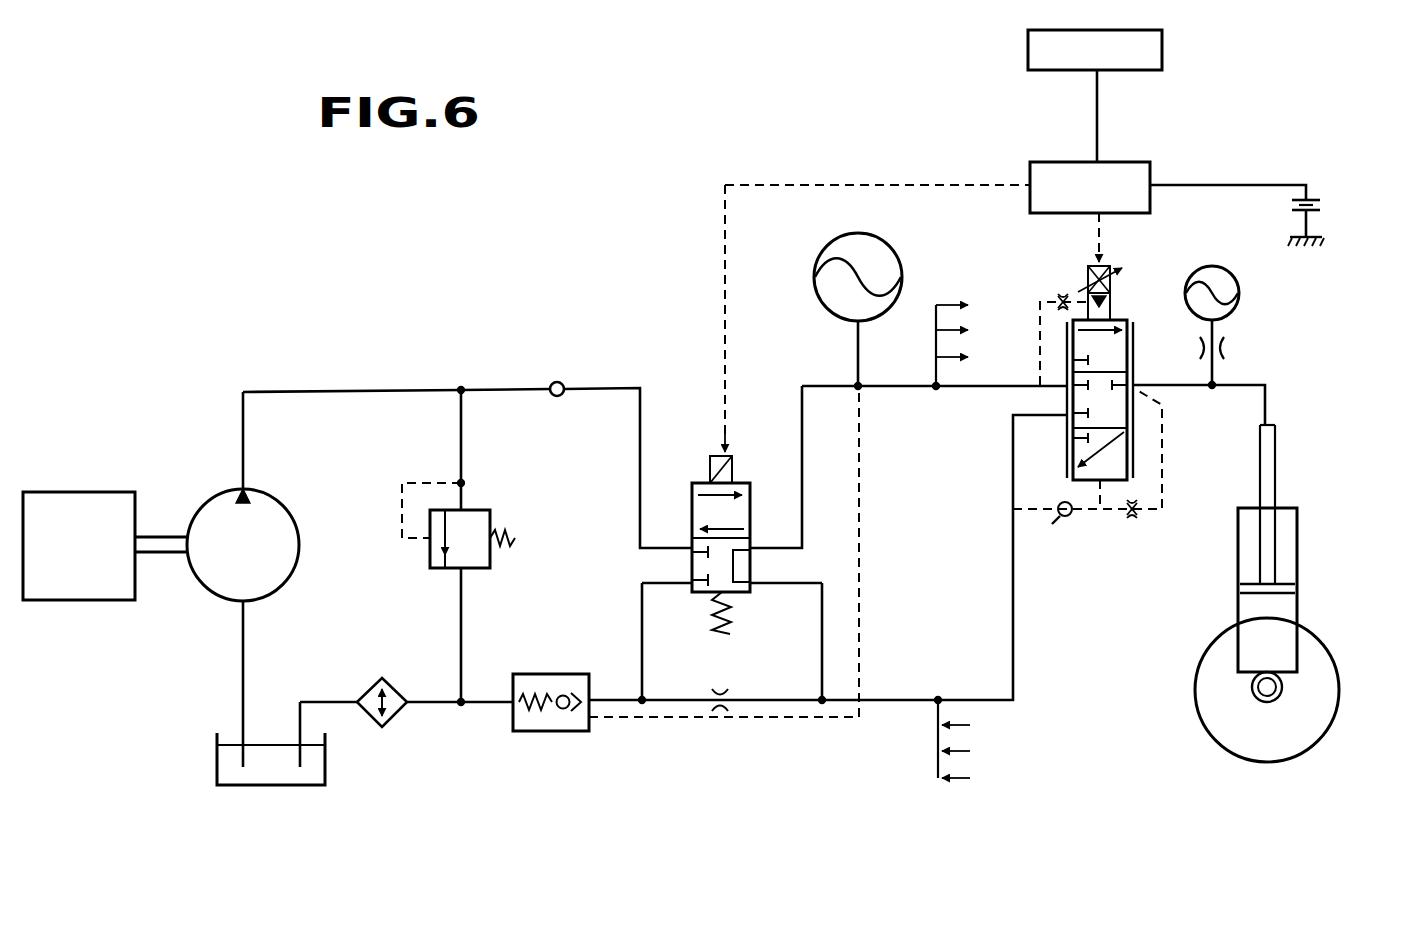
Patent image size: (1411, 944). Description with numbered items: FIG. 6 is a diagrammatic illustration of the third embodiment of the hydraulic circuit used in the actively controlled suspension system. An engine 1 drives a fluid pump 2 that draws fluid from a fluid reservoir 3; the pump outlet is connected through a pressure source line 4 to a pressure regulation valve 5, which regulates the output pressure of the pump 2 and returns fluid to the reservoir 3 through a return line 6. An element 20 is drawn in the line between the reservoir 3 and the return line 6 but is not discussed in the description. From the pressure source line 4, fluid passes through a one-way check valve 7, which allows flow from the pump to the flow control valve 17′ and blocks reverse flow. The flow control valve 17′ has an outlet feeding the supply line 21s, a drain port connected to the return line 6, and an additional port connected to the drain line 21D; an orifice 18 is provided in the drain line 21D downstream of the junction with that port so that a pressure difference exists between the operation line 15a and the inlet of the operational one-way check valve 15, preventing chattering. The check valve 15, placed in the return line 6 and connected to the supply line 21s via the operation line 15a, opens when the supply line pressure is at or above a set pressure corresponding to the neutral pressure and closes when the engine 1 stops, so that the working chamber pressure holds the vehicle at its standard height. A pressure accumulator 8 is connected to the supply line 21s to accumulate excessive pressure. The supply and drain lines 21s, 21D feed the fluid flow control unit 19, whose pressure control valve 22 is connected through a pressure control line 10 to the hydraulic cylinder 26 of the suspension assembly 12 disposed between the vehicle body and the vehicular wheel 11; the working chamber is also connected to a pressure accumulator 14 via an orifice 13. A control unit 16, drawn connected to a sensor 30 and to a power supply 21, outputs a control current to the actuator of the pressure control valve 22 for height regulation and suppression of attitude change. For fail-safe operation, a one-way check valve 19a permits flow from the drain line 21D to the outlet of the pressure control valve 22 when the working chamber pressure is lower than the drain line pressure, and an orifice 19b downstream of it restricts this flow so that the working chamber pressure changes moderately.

The engine 1 is at (93, 490).
The fluid pump 2 is at (283, 482).
The fluid reservoir 3 is at (253, 787).
The pressure source line 4 is at (352, 385).
The pressure regulation valve 5 is at (488, 505).
The return line 6 is at (440, 706).
The one-way check valve 7 is at (558, 378).
The pressure accumulator 8 is at (905, 272).
The pressure control line 10 is at (1271, 380).
The vehicular wheel 11 is at (1243, 755).
The suspension assembly 12 is at (1299, 555).
The orifice 13 is at (1236, 350).
The pressure accumulator 14 is at (1225, 267).
The operational one-way check valve 15 is at (568, 735).
The operation line 15a is at (866, 570).
The control unit 16 is at (1122, 160).
The flow control valve 17′ is at (743, 600).
The orifice 18 is at (718, 687).
The fluid flow control unit 19 is at (1098, 484).
The one-way check valve 19a is at (1058, 520).
The orifice 19b is at (1136, 520).
The filter 20 is at (372, 726).
The battery 21 is at (1321, 199).
The supply line 21s is at (903, 392).
The drain line 21D is at (1013, 648).
The pressure control valve 22 is at (1115, 403).
The hydraulic cylinder 26 is at (1287, 608).
The sensor 30 is at (1166, 45).